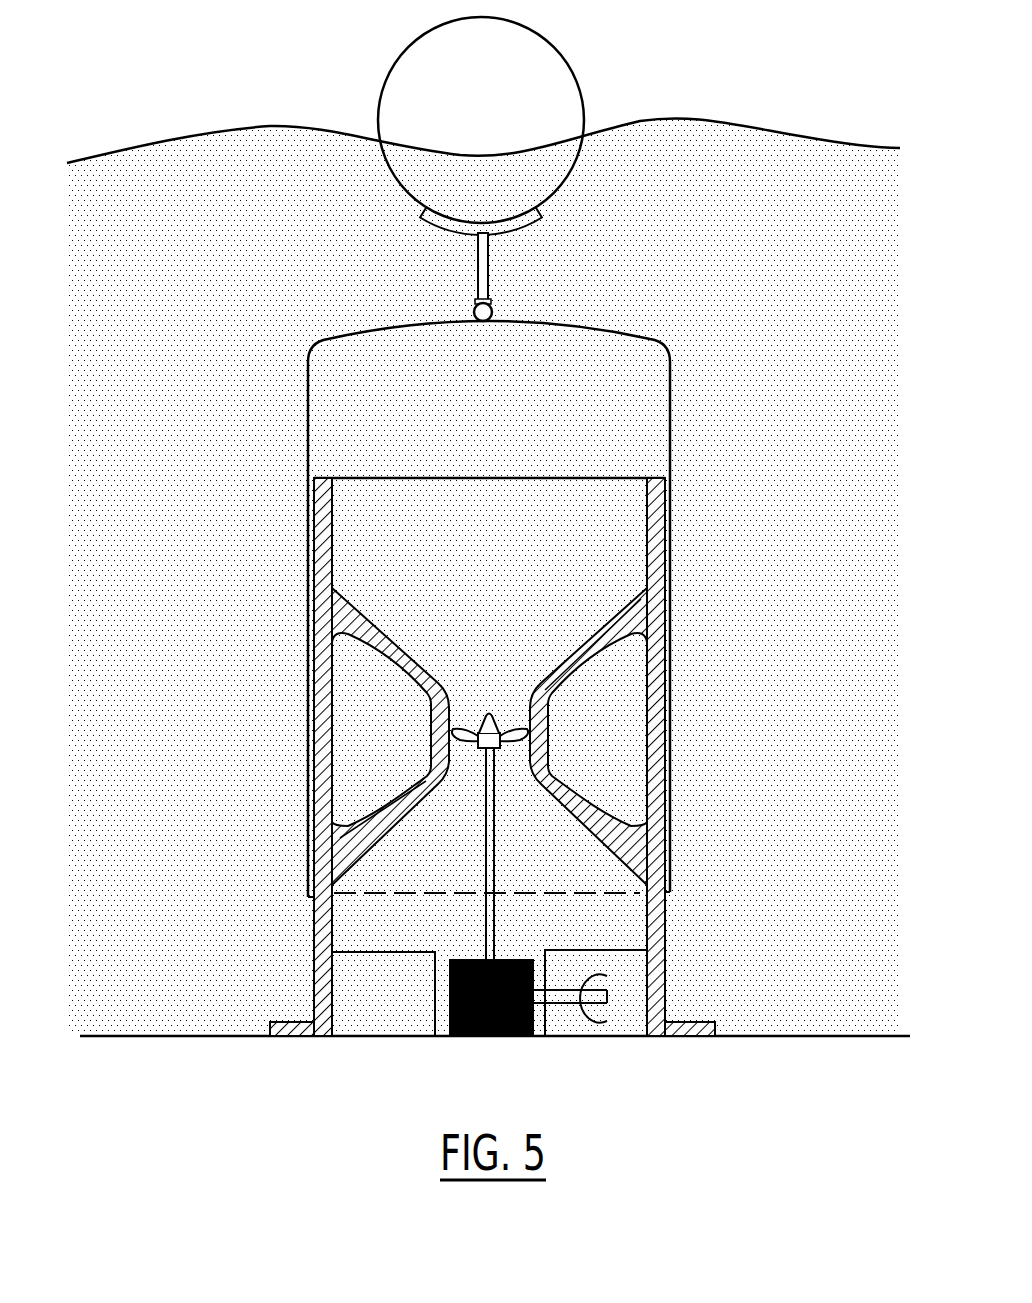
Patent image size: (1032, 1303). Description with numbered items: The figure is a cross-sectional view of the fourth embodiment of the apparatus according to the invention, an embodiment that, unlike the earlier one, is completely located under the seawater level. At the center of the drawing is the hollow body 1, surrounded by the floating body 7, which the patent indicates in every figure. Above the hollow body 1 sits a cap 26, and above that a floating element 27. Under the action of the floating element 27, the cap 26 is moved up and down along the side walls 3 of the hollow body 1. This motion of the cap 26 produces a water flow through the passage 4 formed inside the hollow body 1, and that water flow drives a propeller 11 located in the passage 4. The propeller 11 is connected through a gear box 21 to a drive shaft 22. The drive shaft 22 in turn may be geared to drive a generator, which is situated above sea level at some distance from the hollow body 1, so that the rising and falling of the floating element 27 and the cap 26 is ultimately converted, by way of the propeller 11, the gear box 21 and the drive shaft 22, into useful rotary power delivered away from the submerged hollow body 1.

The hollow body 1 is at (486, 702).
The side walls 3 is at (316, 588).
The passage 4 is at (369, 780).
The floating body 7 is at (598, 285).
The propeller 11 is at (463, 728).
The gear box 21 is at (450, 977).
The drive shaft 22 is at (570, 1030).
The cap 26 is at (669, 368).
The floating element 27 is at (558, 74).